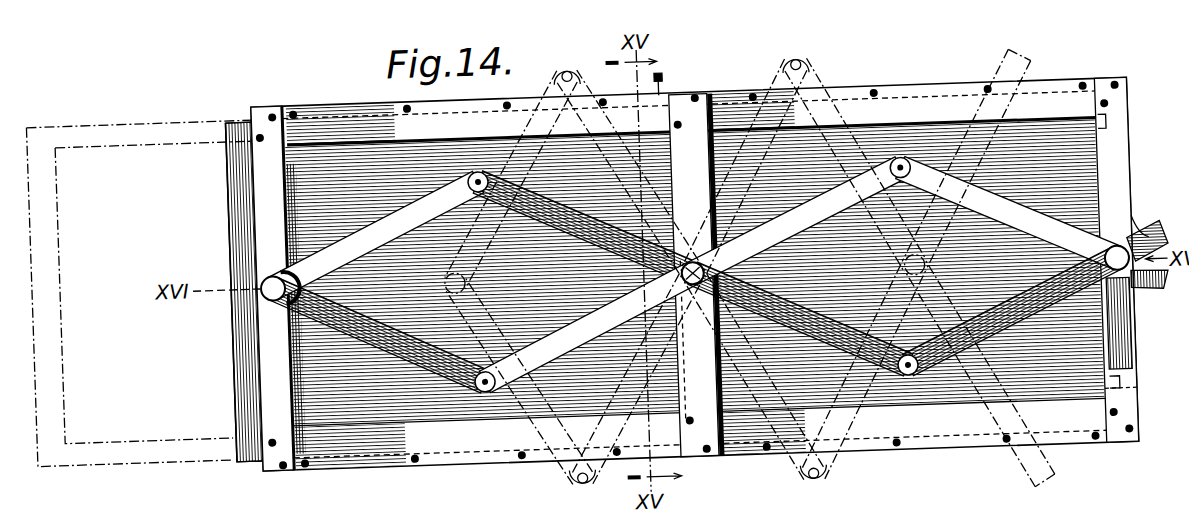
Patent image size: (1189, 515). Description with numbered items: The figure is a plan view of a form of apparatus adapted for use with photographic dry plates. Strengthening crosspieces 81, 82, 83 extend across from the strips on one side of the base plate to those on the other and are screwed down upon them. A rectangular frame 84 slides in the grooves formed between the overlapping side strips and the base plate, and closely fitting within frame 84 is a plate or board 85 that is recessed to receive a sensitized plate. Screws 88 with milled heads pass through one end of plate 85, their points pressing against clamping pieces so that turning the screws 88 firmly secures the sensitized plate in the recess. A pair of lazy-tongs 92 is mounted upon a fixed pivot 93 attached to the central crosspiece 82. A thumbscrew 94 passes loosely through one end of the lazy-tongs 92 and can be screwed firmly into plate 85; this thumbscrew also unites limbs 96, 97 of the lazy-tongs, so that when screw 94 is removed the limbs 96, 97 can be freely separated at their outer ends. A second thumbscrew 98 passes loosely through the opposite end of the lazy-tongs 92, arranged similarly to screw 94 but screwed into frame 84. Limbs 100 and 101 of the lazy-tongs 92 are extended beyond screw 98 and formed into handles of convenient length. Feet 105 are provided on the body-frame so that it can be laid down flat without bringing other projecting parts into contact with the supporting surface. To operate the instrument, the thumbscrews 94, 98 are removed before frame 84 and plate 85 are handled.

The strengthening crosspiece 81 is at (1126, 407).
The strengthening crosspiece 82 is at (684, 448).
The strengthening crosspiece 83 is at (257, 452).
The rectangular frame 84 is at (104, 433).
The plate or board 85 is at (349, 148).
The screw with milled head 88 is at (754, 112).
The lazy-tongs 92 is at (796, 221).
The fixed pivot 93 is at (691, 258).
The thumbscrew 94 is at (264, 275).
The limb of lazy-tongs 96 is at (375, 235).
The limb of lazy-tongs 97 is at (424, 341).
The second thumbscrew 98 is at (1129, 255).
The limb of lazy-tongs 100 is at (1040, 227).
The limb of lazy-tongs 101 is at (1051, 307).
The foot 105 is at (274, 89).